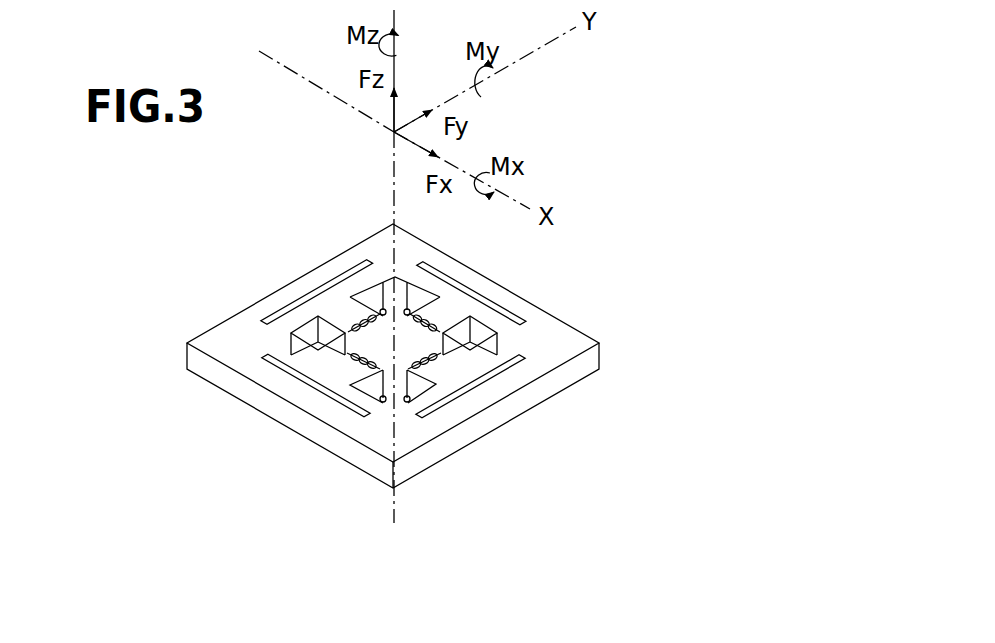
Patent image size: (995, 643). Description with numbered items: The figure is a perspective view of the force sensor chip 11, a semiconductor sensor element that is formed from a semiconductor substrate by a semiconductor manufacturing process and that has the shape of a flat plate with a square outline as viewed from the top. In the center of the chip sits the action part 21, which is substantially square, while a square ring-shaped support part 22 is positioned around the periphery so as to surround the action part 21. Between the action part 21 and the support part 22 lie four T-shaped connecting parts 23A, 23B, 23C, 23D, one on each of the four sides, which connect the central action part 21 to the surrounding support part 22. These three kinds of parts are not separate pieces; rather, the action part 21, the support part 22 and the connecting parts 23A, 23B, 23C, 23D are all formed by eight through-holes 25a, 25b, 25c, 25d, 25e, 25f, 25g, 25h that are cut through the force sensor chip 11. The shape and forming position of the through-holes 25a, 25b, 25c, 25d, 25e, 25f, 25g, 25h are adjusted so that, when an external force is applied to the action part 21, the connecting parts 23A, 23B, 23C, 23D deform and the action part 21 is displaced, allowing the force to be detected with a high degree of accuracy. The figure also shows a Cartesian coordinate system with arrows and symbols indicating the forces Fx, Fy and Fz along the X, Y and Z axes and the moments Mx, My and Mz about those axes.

The force sensor chip 11 is at (580, 325).
The action part 21 is at (282, 320).
The support part 22 is at (528, 368).
The connecting part 23A is at (452, 305).
The connecting part 23B is at (453, 372).
The connecting part 23C is at (333, 377).
The connecting part 23D is at (343, 300).
The through-hole 25a is at (433, 266).
The through-hole 25b is at (425, 415).
The through-hole 25c is at (272, 362).
The through-hole 25d is at (265, 323).
The through-hole 25e is at (524, 372).
The through-hole 25f is at (370, 383).
The through-hole 25g is at (295, 337).
The through-hole 25h is at (378, 292).